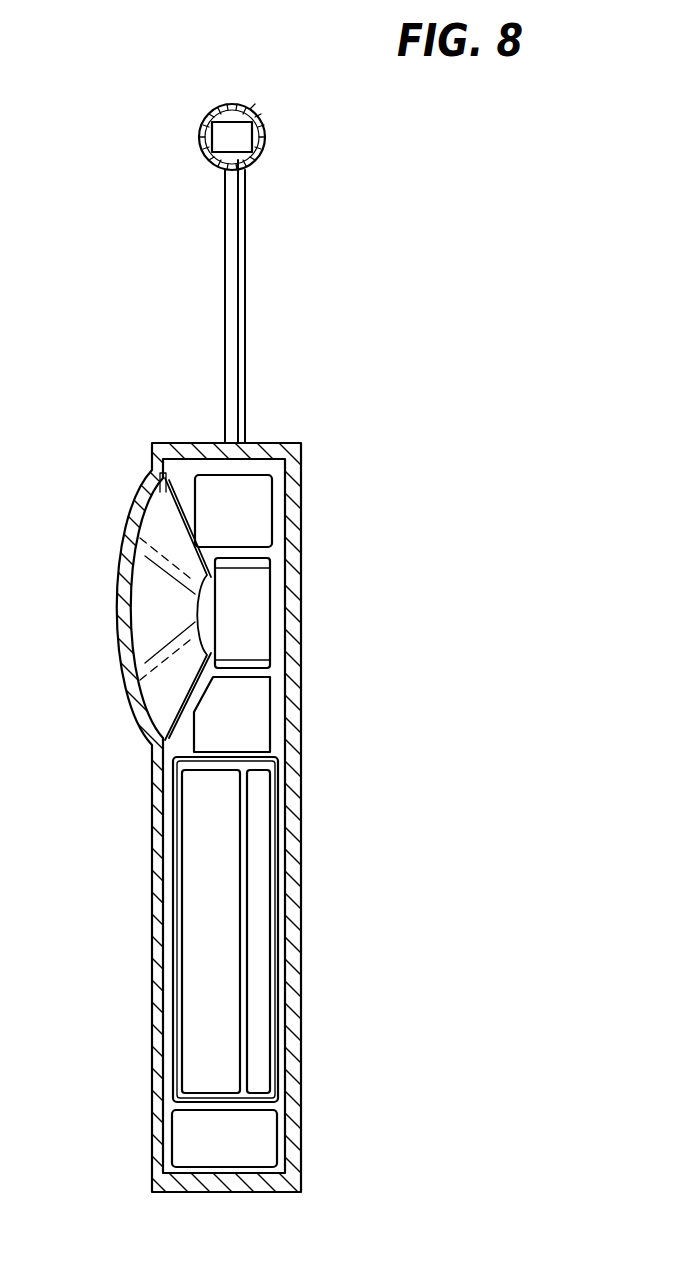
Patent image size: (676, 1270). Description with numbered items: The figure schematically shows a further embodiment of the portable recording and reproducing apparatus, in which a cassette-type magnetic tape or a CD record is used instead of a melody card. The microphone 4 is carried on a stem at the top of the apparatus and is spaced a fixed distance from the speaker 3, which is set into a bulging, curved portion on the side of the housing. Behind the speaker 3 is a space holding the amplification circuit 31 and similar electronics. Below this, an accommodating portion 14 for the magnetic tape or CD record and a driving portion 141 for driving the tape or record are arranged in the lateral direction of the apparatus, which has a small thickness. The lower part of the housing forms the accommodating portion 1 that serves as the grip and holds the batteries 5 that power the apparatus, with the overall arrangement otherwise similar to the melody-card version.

The accommodating portion 1 is at (121, 927).
The speaker 3 is at (157, 551).
The microphone 4 is at (247, 143).
The batteries 5 is at (265, 1147).
The accommodating portion for a magnetic tape 14 is at (222, 970).
The amplification circuit 31 is at (257, 497).
The driving portion 141 is at (258, 787).